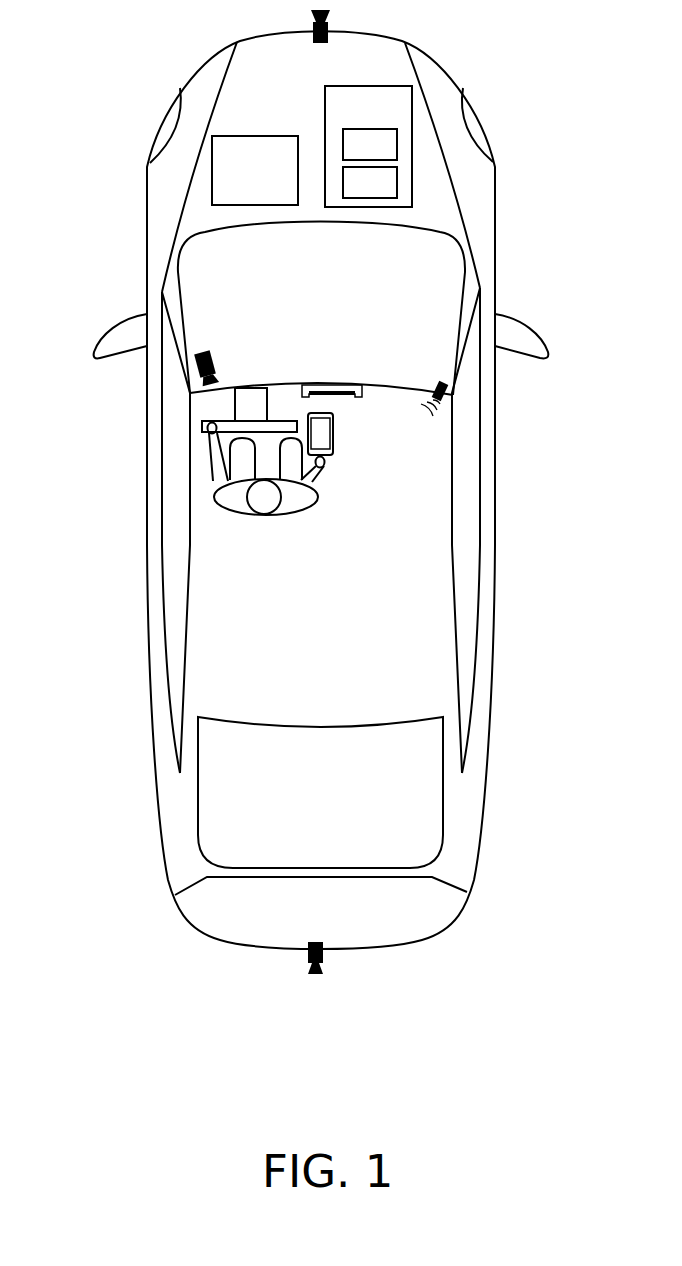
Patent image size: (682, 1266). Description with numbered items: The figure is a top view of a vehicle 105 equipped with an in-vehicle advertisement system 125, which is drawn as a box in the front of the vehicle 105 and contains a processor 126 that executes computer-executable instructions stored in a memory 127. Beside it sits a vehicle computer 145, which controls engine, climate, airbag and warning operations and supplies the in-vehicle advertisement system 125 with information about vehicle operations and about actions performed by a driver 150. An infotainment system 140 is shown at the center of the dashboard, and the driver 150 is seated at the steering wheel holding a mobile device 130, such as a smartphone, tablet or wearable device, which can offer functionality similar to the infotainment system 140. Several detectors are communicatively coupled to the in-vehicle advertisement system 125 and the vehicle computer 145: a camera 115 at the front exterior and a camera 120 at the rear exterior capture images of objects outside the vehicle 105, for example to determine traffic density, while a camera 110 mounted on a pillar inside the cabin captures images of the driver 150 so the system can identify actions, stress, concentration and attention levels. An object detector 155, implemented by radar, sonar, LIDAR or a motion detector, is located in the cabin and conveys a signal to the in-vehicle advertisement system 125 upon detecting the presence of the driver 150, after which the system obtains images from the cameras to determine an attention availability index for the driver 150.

The vehicle 105 is at (128, 77).
The camera 110 is at (208, 352).
The camera 115 is at (321, 44).
The camera 120 is at (323, 953).
The in-vehicle advertisement system 125 is at (399, 118).
The processor 126 is at (389, 156).
The memory 127 is at (389, 194).
The mobile device 130 is at (333, 420).
The infotainment system 140 is at (327, 384).
The vehicle computer 145 is at (273, 180).
The driver 150 is at (278, 515).
The object detector 155 is at (441, 381).